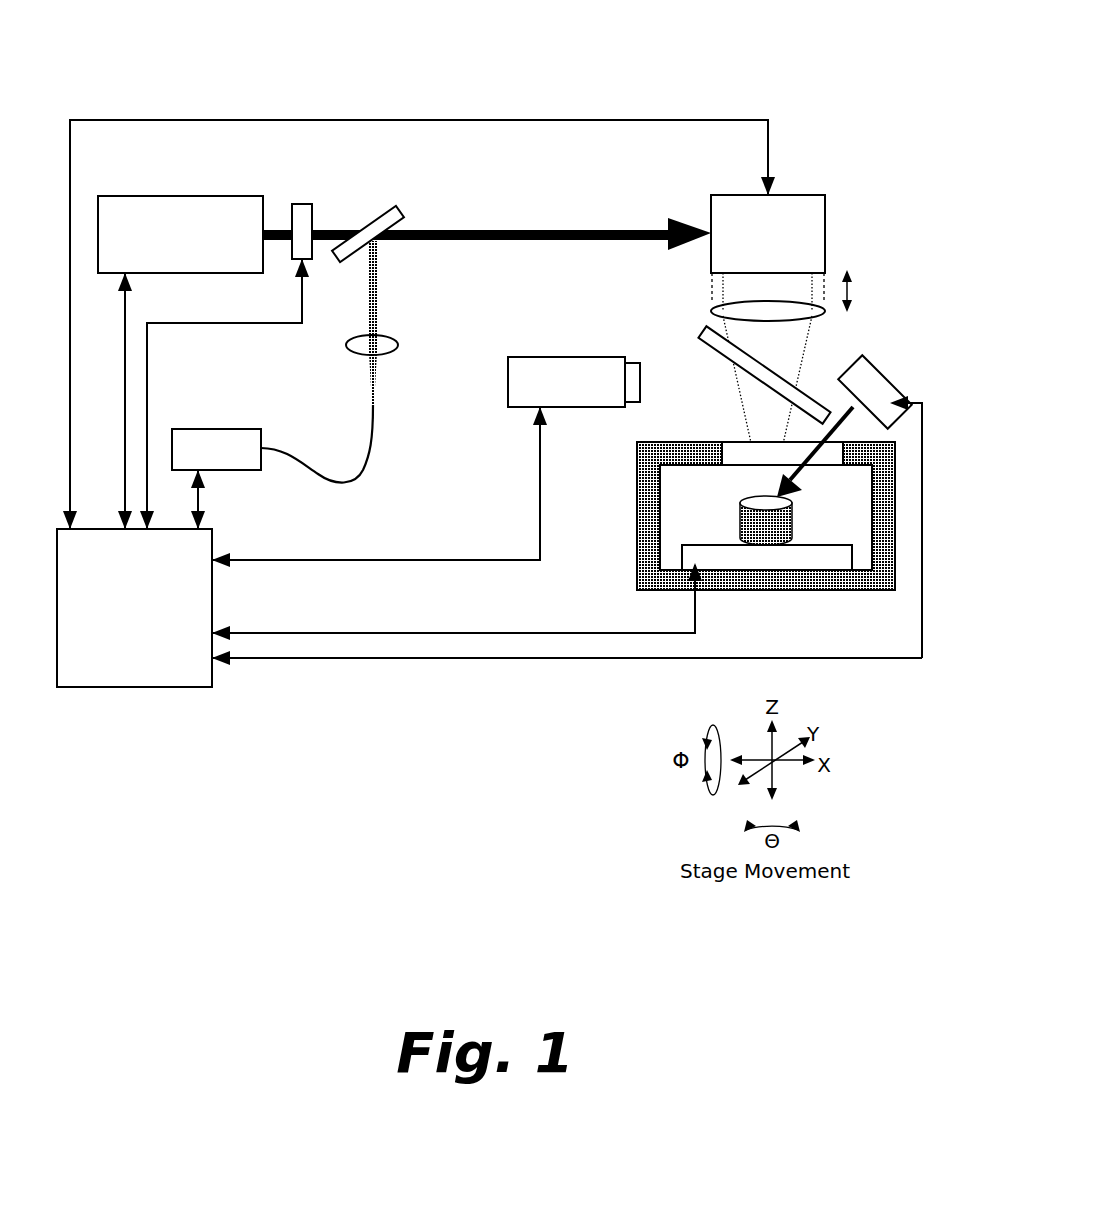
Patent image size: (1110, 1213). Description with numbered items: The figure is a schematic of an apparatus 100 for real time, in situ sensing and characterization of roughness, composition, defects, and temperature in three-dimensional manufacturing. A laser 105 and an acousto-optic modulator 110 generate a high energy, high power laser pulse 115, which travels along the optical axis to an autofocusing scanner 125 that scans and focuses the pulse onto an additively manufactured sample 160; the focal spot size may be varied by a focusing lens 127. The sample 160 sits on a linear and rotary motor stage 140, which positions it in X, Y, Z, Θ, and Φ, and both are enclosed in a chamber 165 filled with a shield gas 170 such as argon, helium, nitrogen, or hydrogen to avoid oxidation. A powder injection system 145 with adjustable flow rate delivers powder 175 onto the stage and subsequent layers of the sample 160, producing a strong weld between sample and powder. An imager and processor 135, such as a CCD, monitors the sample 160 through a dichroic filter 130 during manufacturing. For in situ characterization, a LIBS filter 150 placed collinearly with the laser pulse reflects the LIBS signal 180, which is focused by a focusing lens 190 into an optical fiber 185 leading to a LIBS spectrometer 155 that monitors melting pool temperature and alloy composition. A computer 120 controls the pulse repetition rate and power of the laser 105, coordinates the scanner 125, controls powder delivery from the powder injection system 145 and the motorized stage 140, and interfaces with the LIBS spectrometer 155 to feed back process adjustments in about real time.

The apparatus 100 is at (461, 265).
The laser 105 is at (157, 249).
The acousto-optic modulator 110 is at (226, 334).
The laser pulse 115 is at (487, 195).
The computer 120 is at (111, 617).
The autofocusing scanner 125 is at (745, 248).
The focusing lens 127 is at (717, 378).
The dichroic filter 130 is at (716, 359).
The imager and processor 135 is at (543, 396).
The linear and rotary motor stage 140 is at (544, 592).
The powder injection system 145 is at (594, 502).
The LIBS filter 150 is at (419, 219).
The LIBS spectrometer 155 is at (193, 463).
The additively manufactured sample 160 is at (802, 520).
The chamber 165 is at (723, 516).
The shield gas 170 is at (714, 513).
The powder 175 is at (820, 458).
The LIBS signal 180 is at (423, 332).
The optical fiber 185 is at (360, 458).
The focusing lens 190 is at (329, 356).